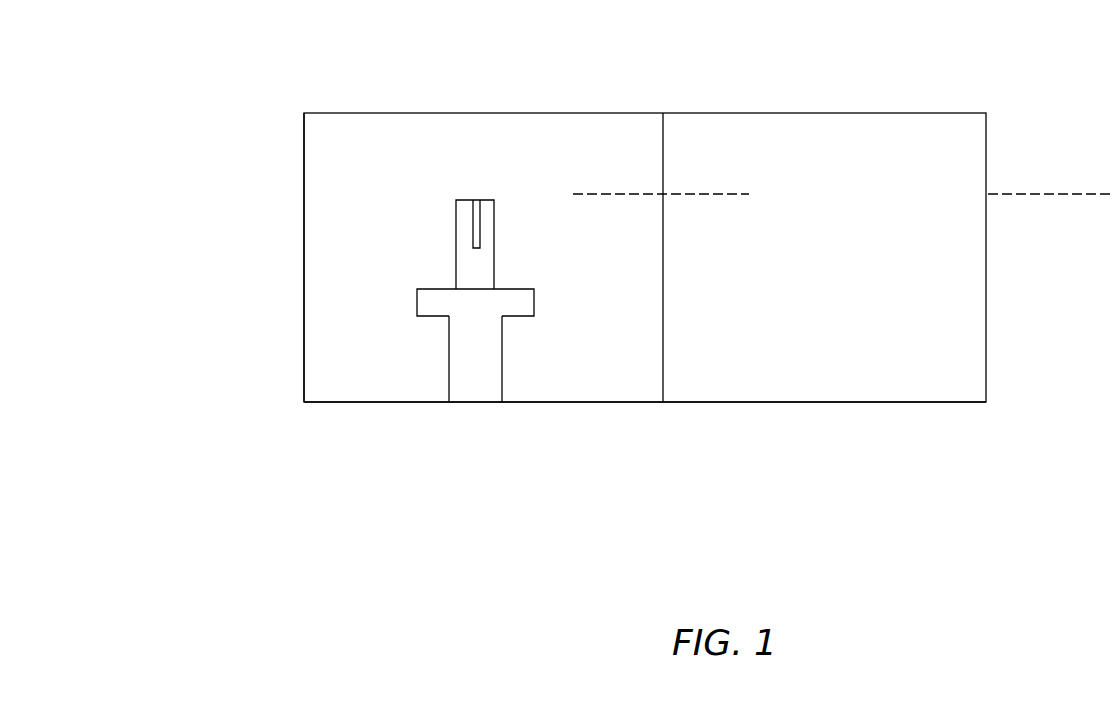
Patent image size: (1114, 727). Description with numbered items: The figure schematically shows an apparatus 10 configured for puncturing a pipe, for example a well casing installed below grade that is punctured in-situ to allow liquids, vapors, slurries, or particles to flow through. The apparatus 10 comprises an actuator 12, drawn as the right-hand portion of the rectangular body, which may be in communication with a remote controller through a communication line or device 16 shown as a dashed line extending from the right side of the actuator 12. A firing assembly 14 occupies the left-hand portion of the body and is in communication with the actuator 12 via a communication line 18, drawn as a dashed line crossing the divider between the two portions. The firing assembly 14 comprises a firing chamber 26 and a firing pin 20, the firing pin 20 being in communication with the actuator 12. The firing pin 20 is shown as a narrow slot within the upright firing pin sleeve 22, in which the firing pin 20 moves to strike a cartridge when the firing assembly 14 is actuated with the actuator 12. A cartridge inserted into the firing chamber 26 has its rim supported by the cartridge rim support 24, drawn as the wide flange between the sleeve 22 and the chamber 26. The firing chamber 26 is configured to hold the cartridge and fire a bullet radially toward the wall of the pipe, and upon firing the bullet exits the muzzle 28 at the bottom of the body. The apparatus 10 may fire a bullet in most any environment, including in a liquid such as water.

The apparatus 10 is at (832, 64).
The actuator 12 is at (986, 315).
The firing assembly 14 is at (304, 294).
The communication line or device 16 is at (1038, 194).
The communication line 18 is at (631, 194).
The firing pin 20 is at (473, 220).
The firing pin sleeve 22 is at (456, 244).
The cartridge rim support 24 is at (417, 305).
The firing chamber 26 is at (449, 366).
The muzzle 28 is at (475, 402).